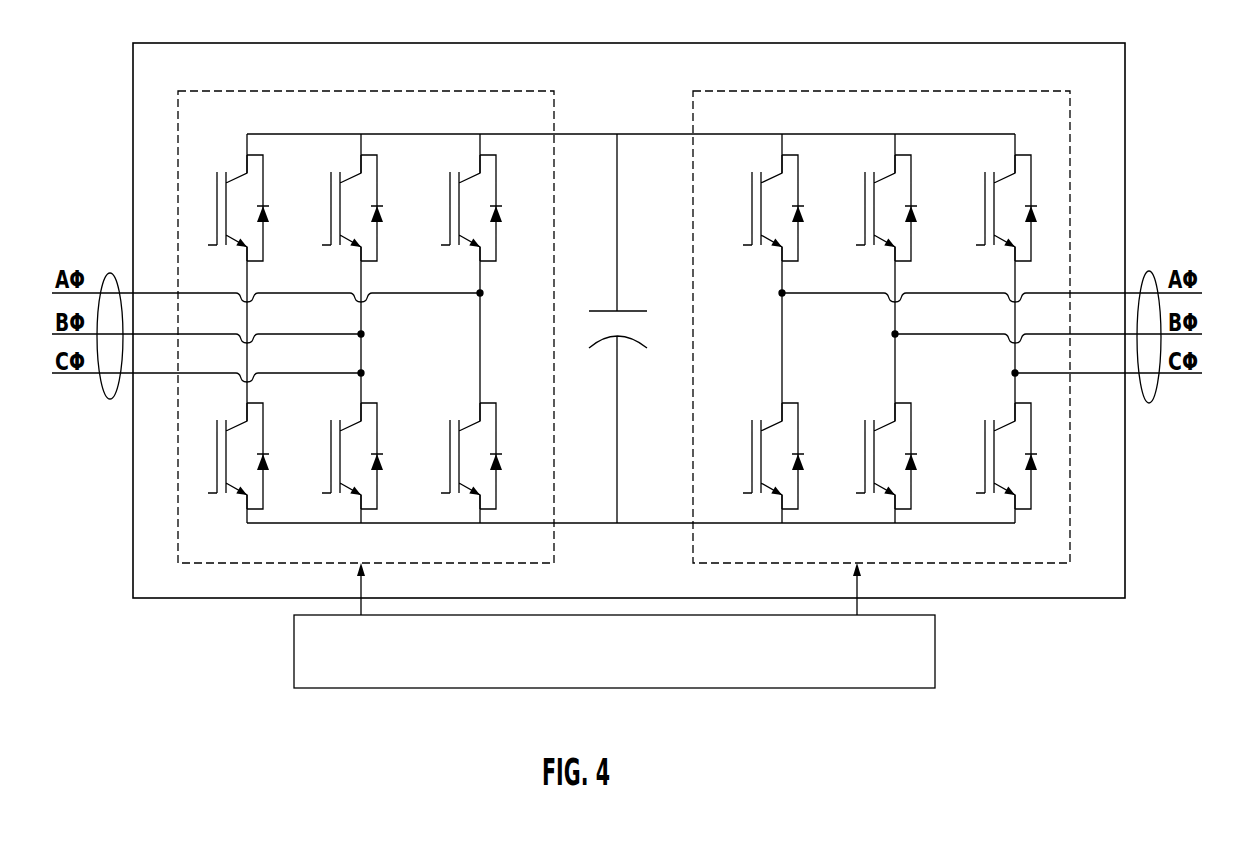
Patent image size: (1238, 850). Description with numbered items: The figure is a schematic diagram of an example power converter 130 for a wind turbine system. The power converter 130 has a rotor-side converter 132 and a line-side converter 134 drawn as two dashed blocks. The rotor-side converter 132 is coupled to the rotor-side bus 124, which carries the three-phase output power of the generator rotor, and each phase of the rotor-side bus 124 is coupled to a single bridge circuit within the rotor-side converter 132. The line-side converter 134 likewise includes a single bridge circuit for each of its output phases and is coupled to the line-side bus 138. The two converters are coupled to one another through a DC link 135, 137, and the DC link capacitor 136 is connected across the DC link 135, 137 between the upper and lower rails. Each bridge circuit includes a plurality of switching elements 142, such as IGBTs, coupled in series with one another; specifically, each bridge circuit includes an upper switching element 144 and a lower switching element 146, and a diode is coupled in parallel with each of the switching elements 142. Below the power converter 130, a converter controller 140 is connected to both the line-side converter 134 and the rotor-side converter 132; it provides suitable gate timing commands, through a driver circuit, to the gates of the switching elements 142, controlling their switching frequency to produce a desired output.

The power converter 130 is at (914, 36).
The rotor-side converter 132 is at (993, 91).
The line-side converter 134 is at (418, 91).
The DC link 135 is at (565, 133).
The DC link capacitor 136 is at (630, 311).
The DC link 137 is at (580, 523).
The line-side bus 138 is at (110, 273).
The rotor-side bus 124 is at (1149, 271).
The converter controller 140 is at (935, 658).
The switching elements 142 is at (510, 166).
The upper switching element 144 is at (750, 218).
The lower switching element 146 is at (750, 452).